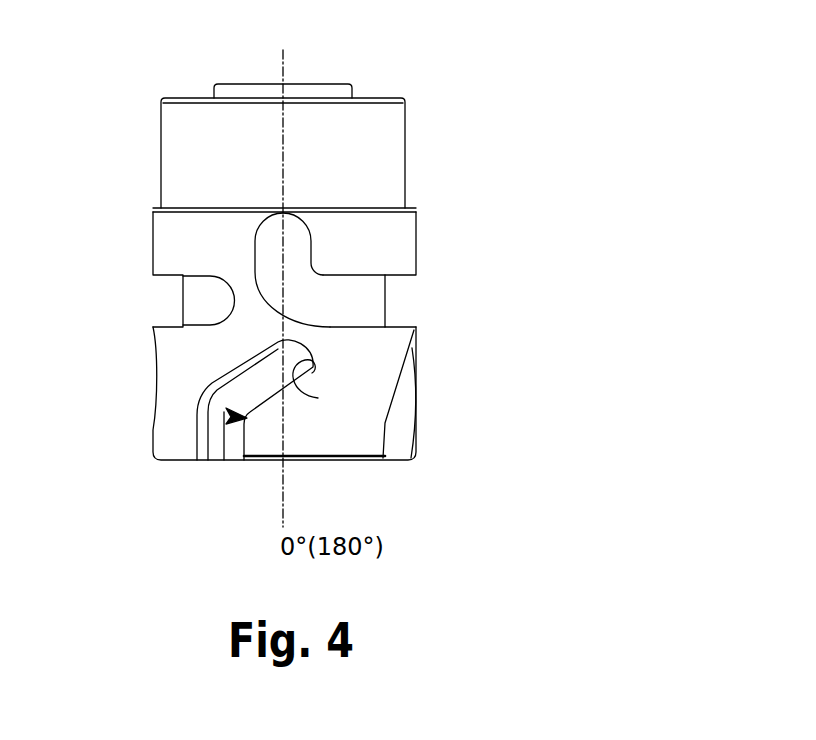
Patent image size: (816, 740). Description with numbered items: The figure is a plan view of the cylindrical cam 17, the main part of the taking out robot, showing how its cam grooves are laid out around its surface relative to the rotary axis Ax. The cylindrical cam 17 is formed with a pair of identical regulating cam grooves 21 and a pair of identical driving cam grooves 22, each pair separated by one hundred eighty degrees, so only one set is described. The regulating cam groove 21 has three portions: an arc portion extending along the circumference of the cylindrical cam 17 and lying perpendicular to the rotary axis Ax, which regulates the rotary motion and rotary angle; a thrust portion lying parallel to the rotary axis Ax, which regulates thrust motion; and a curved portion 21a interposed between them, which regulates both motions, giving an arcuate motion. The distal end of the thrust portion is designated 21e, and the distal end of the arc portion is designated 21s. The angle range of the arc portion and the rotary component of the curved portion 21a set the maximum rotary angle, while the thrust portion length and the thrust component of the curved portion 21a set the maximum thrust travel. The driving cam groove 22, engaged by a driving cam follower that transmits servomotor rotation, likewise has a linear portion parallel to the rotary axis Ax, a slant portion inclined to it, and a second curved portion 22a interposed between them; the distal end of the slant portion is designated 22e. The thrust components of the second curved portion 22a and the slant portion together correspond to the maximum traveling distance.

The cylindrical cam 17 is at (479, 37).
The regulating cam groove 21 is at (396, 326).
The curved groove portion 21a is at (277, 305).
The distal end of the arc portion 21s is at (233, 293).
The distal end of the thrust portion 21e is at (292, 217).
The driving cam groove 22 is at (224, 455).
The second curved portion 22a is at (213, 383).
The distal end of the slant portion 22e is at (318, 398).
The rotary axis Ax is at (282, 274).